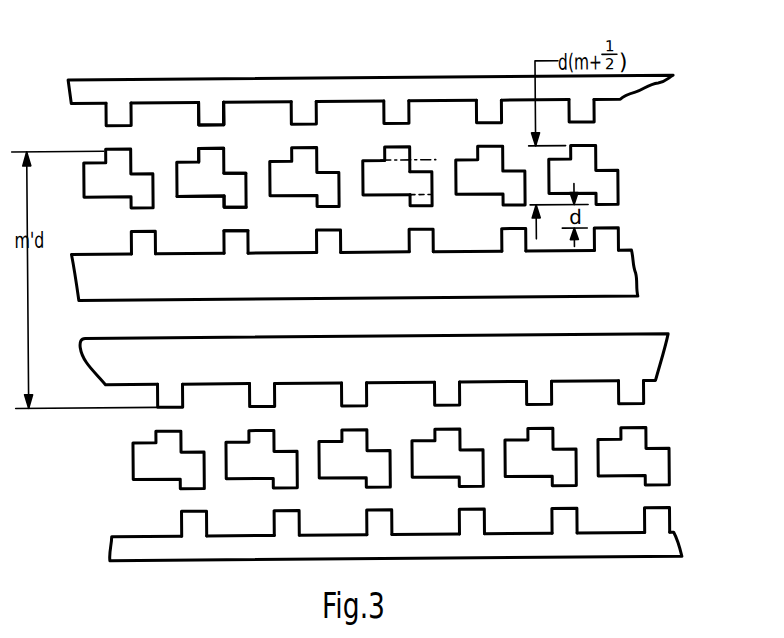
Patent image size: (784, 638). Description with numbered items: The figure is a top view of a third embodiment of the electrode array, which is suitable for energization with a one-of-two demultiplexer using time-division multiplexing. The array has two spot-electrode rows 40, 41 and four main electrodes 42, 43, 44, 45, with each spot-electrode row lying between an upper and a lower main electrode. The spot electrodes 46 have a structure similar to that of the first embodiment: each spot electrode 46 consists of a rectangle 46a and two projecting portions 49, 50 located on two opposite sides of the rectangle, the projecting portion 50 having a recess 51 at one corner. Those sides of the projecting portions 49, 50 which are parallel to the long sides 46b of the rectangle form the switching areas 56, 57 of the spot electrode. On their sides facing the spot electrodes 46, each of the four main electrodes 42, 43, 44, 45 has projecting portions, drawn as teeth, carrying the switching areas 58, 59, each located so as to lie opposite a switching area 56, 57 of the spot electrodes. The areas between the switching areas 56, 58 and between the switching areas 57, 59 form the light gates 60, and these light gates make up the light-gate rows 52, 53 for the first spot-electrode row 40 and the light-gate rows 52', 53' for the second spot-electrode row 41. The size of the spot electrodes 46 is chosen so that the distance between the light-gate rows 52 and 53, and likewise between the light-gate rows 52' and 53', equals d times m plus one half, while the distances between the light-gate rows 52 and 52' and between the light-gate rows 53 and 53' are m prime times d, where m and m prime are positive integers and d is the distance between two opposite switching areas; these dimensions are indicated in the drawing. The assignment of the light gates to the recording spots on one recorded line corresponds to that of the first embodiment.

The spot-electrode row 40 is at (630, 175).
The spot-electrode row 41 is at (668, 459).
The main electrode 42 is at (634, 82).
The main electrode 43 is at (621, 274).
The main electrode 44 is at (656, 352).
The main electrode 45 is at (666, 549).
The spot electrode 46 is at (226, 146).
The rectangle 46a is at (458, 141).
The long sides of the rectangle 46b is at (399, 163).
The projecting portion 49 is at (199, 156).
The projecting portion 50 is at (222, 195).
The recess 51 is at (226, 171).
The light-gate row 52 is at (386, 123).
The light-gate row 52' is at (436, 406).
The light-gate row 53 is at (410, 228).
The light-gate row 53' is at (463, 509).
The switching area 56 is at (200, 146).
The switching area 57 is at (225, 196).
The switching area 58 is at (219, 120).
The switching area 59 is at (225, 230).
The light gate 60 is at (206, 121).